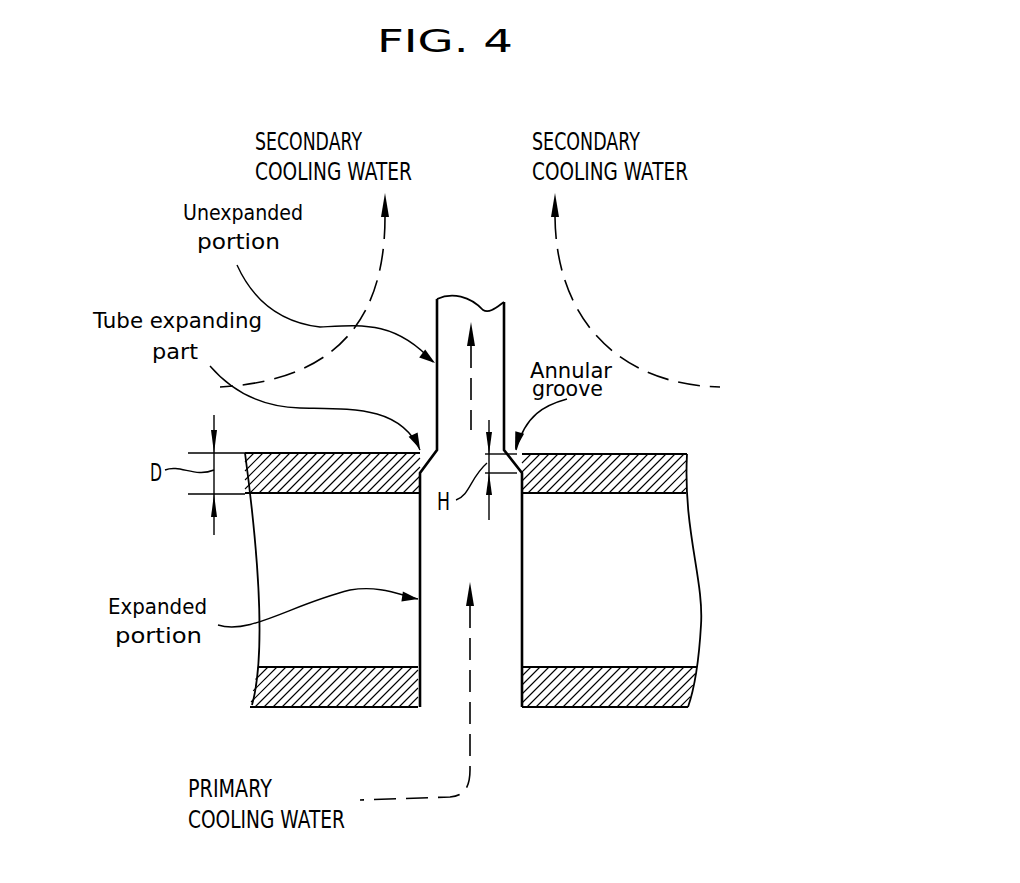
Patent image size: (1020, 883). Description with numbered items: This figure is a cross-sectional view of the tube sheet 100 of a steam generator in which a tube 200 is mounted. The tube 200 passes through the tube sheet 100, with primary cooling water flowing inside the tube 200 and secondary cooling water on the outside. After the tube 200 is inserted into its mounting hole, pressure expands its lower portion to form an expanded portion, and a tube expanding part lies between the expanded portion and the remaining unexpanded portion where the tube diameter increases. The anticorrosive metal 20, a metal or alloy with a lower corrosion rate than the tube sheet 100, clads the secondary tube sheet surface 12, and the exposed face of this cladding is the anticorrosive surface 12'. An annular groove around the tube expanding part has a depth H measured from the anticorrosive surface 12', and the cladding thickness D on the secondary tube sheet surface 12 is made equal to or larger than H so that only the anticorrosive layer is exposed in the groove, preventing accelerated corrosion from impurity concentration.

The tube 200 is at (507, 347).
The tube sheet of steam generator 100 is at (280, 553).
The secondary tube sheet surface 12 is at (657, 580).
The anticorrosive surface 12' is at (649, 437).
The anticorrosive metal 20 is at (610, 683).